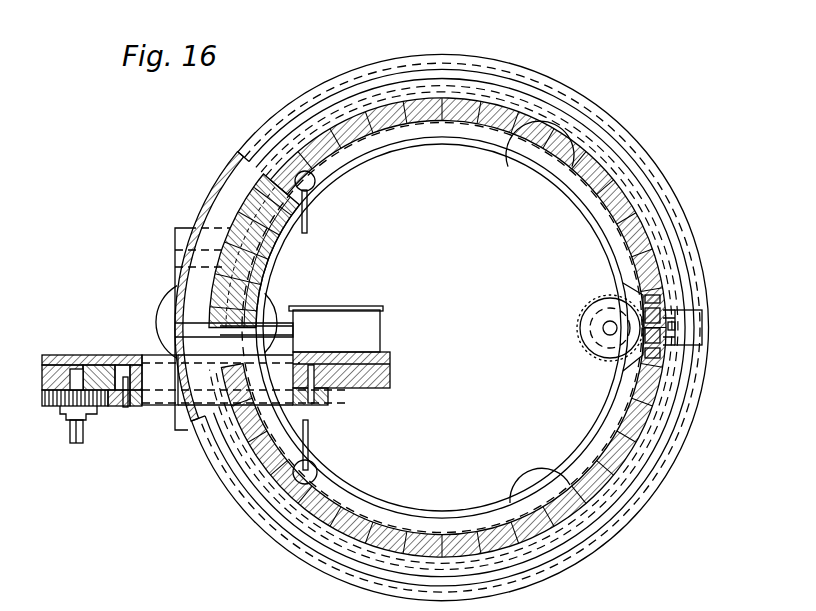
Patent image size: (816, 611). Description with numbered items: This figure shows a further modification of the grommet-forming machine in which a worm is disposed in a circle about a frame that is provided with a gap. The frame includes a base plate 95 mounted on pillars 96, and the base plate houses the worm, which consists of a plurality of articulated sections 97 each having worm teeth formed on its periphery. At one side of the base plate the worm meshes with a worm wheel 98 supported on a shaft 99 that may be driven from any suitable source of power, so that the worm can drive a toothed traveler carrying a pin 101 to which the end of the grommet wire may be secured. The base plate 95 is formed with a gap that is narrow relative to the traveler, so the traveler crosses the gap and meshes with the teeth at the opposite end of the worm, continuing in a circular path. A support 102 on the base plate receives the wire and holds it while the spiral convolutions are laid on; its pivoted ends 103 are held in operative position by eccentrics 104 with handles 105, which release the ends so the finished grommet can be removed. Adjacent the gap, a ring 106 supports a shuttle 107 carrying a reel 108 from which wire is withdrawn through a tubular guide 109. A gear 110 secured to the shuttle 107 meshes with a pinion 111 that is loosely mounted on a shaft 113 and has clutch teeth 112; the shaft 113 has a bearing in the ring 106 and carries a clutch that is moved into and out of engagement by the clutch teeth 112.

The base plate 95 is at (483, 133).
The pillars 96 is at (533, 168).
The articulated sections 97 is at (294, 230).
The worm wheel 98 is at (604, 356).
The shaft 99 is at (600, 333).
The pin 101 is at (689, 343).
The support 102 is at (484, 540).
The pivoted ends 103 is at (330, 505).
The eccentrics 104 is at (312, 468).
The handles 105 is at (314, 432).
The ring 106 is at (690, 324).
The shuttle 107 is at (130, 355).
The reel 108 is at (376, 326).
The tubular guide 109 is at (270, 302).
The gear 110 is at (116, 410).
The pinion 111 is at (52, 410).
The clutch teeth 112 is at (93, 420).
The shaft 113 is at (78, 445).